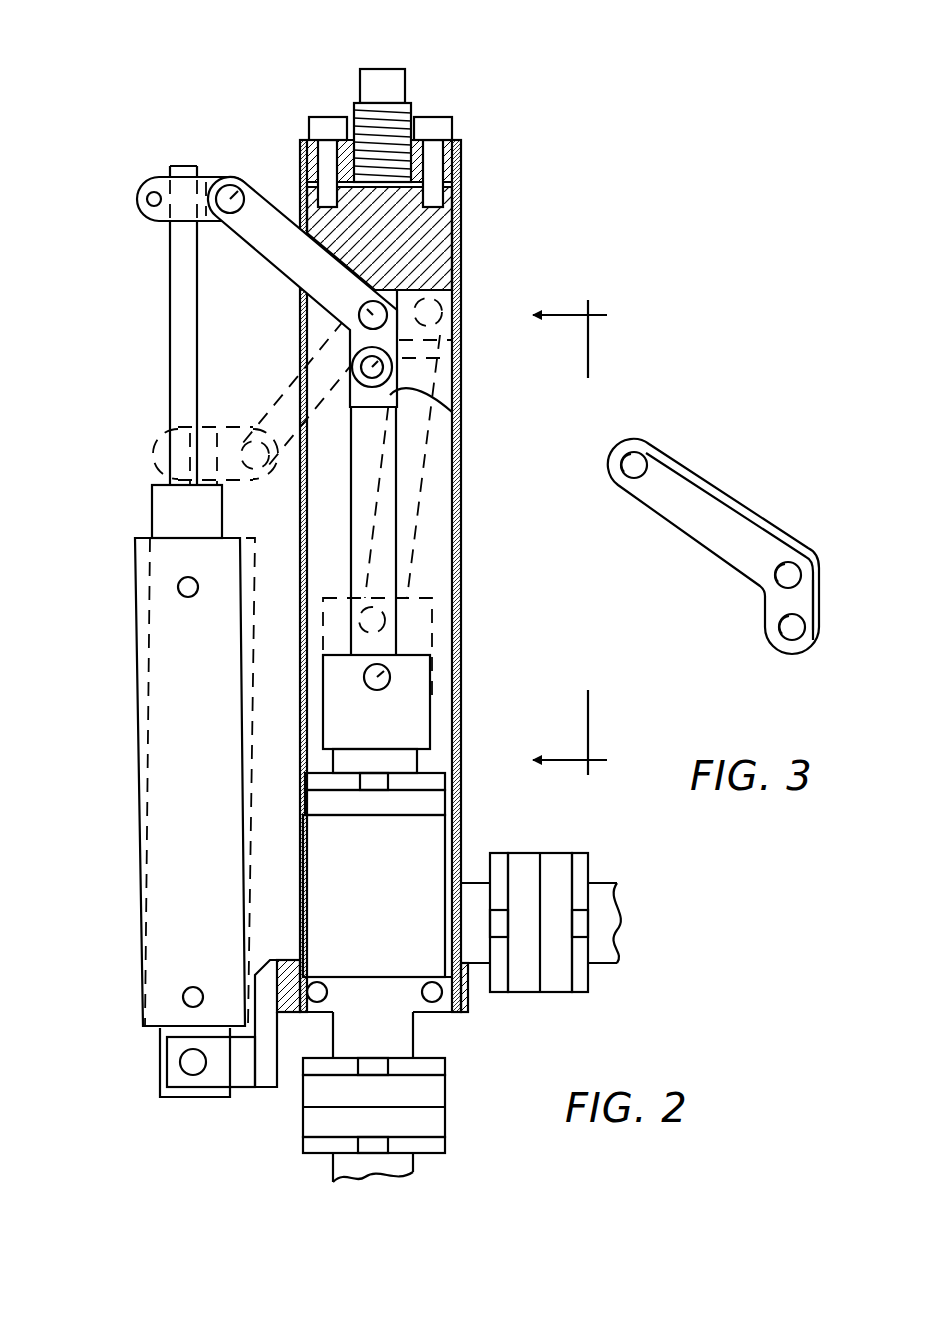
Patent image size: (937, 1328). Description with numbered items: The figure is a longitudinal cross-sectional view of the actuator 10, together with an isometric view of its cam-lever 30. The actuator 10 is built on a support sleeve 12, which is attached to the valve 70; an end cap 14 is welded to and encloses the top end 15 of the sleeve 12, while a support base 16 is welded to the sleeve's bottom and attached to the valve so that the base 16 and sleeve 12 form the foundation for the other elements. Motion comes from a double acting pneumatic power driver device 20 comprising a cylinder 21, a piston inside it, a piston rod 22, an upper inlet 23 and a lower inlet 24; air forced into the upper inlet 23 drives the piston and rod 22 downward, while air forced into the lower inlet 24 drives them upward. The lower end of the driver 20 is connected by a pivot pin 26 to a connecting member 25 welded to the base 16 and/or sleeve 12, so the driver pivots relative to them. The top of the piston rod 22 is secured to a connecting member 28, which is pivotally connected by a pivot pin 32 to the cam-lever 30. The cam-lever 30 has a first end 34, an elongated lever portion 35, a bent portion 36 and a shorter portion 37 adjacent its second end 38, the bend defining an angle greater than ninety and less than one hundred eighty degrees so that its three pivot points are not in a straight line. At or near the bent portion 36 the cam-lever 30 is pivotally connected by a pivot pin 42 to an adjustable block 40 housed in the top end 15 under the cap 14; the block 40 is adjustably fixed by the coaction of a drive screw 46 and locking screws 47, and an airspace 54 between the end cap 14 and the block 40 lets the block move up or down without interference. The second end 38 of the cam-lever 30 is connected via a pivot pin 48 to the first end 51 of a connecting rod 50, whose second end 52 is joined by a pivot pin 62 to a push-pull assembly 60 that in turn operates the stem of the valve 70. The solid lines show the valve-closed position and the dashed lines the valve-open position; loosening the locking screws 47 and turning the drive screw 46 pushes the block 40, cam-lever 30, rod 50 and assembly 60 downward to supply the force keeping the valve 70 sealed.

In FIG. 2, the actuator 10 is at (158, 98).
In FIG. 2, the support sleeve 12 is at (462, 480).
In FIG. 2, the end cap 14 is at (459, 141).
In FIG. 2, the top end 15 is at (459, 168).
In FIG. 2, the support base 16 is at (420, 1012).
In FIG. 2, the double acting pneumatic power driver device 20 is at (137, 700).
In FIG. 2, the cylinder 21 is at (212, 812).
In FIG. 2, the piston rod 22 is at (187, 353).
In FIG. 2, the upper inlet 23 is at (188, 598).
In FIG. 2, the lower inlet 24 is at (193, 987).
In FIG. 2, the connecting member 25 is at (267, 1067).
In FIG. 2, the pivot pin 26 is at (188, 1062).
In FIG. 2, the connecting member 28 is at (137, 194).
In FIG. 2, the cam-lever 30 is at (276, 240).
In FIG. 3, the cam-lever 30 is at (748, 470).
In FIG. 2, the pivot pin 32 is at (230, 186).
In FIG. 3, the first end 34 is at (640, 437).
In FIG. 3, the elongated lever portion 35 is at (690, 507).
In FIG. 3, the bent portion 36 is at (813, 553).
In FIG. 3, the shorter portion 37 is at (800, 600).
In FIG. 3, the second end 38 is at (785, 656).
In FIG. 2, the adjustable block 40 is at (420, 262).
In FIG. 2, the pivot pin 42 is at (376, 300).
In FIG. 2, the drive screw 46 is at (386, 68).
In FIG. 2, the locking screws 47 is at (325, 115).
In FIG. 2, the pivot pin 48 is at (357, 400).
In FIG. 2, the connecting rod 50 is at (368, 478).
In FIG. 2, the first end 51 is at (452, 412).
In FIG. 2, the second end 52 is at (420, 635).
In FIG. 2, the airspace 54 is at (460, 185).
In FIG. 2, the push-pull assembly 60 is at (403, 718).
In FIG. 2, the pivot pin 62 is at (390, 683).
In FIG. 2, the valve 70 is at (415, 858).